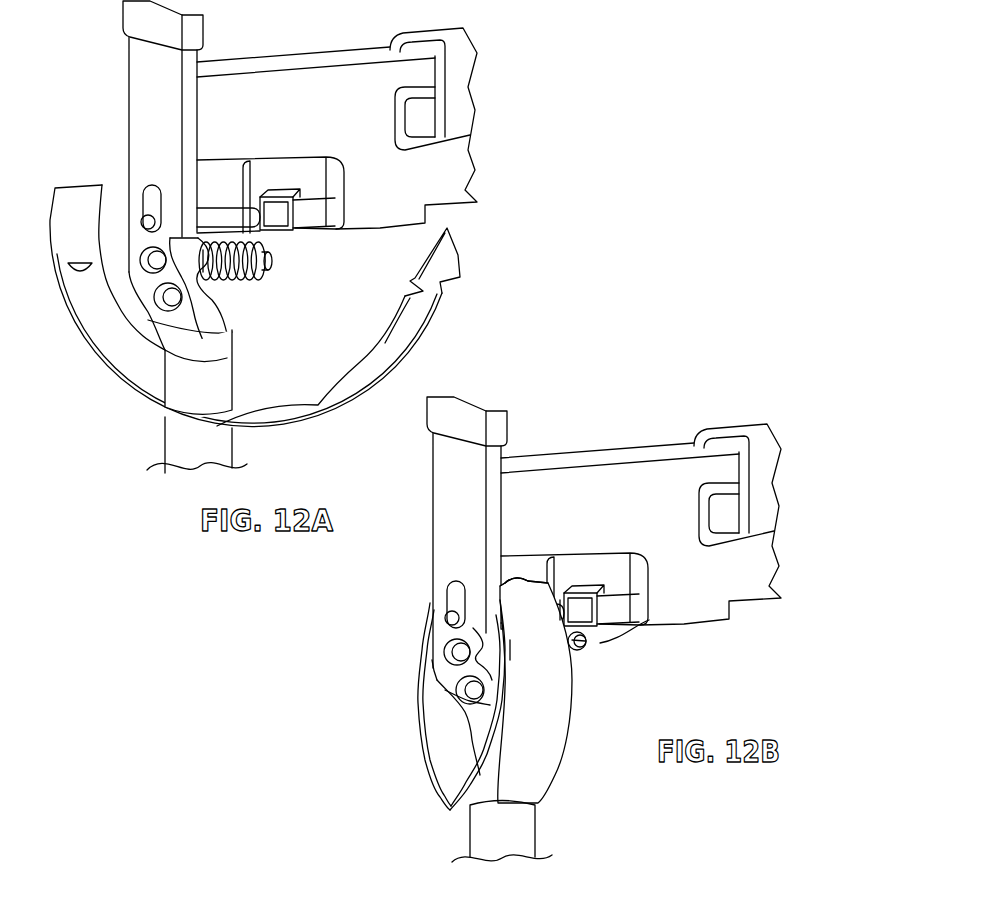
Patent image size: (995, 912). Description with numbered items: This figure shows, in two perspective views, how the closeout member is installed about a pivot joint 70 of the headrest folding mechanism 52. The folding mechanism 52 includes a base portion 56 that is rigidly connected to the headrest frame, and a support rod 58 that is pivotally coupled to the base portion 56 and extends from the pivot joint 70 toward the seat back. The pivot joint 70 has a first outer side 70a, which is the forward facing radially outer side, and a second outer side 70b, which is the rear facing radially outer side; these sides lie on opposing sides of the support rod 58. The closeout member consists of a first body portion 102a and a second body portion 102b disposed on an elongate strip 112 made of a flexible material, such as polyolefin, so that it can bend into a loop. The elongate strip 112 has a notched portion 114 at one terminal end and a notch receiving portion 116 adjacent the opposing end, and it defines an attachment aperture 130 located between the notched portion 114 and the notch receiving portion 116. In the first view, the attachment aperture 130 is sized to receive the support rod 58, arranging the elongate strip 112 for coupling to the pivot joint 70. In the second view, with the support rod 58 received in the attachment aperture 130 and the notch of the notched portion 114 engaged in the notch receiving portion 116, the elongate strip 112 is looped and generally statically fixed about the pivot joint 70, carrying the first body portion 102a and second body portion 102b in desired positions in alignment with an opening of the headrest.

In FIG. 12A, the folding mechanism 52 is at (345, 46).
In FIG. 12B, the folding mechanism 52 is at (620, 413).
In FIG. 12A, the base portion 56 is at (442, 177).
In FIG. 12B, the base portion 56 is at (710, 548).
In FIG. 12A, the support rod 58 is at (240, 440).
In FIG. 12B, the support rod 58 is at (520, 838).
In FIG. 12A, the pivot joint 70 is at (293, 266).
In FIG. 12B, the pivot joint 70 is at (552, 657).
In FIG. 12A, the first outer side 70a is at (256, 298).
In FIG. 12B, the first outer side 70a is at (526, 672).
In FIG. 12A, the second outer side 70b is at (418, 250).
In FIG. 12B, the second outer side 70b is at (484, 626).
In FIG. 12A, the first body portion 102a is at (372, 373).
In FIG. 12B, the first body portion 102a is at (525, 770).
In FIG. 12A, the second body portion 102b is at (140, 380).
In FIG. 12B, the second body portion 102b is at (445, 727).
In FIG. 12A, the elongate strip 112 is at (44, 211).
In FIG. 12B, the elongate strip 112 is at (424, 783).
In FIG. 12A, the notched portion 114 is at (460, 248).
In FIG. 12B, the notched portion 114 is at (504, 578).
In FIG. 12A, the notch receiving portion 116 is at (50, 288).
In FIG. 12B, the notch receiving portion 116 is at (558, 498).
In FIG. 12A, the attachment aperture 130 is at (160, 452).
In FIG. 12B, the attachment aperture 130 is at (470, 838).